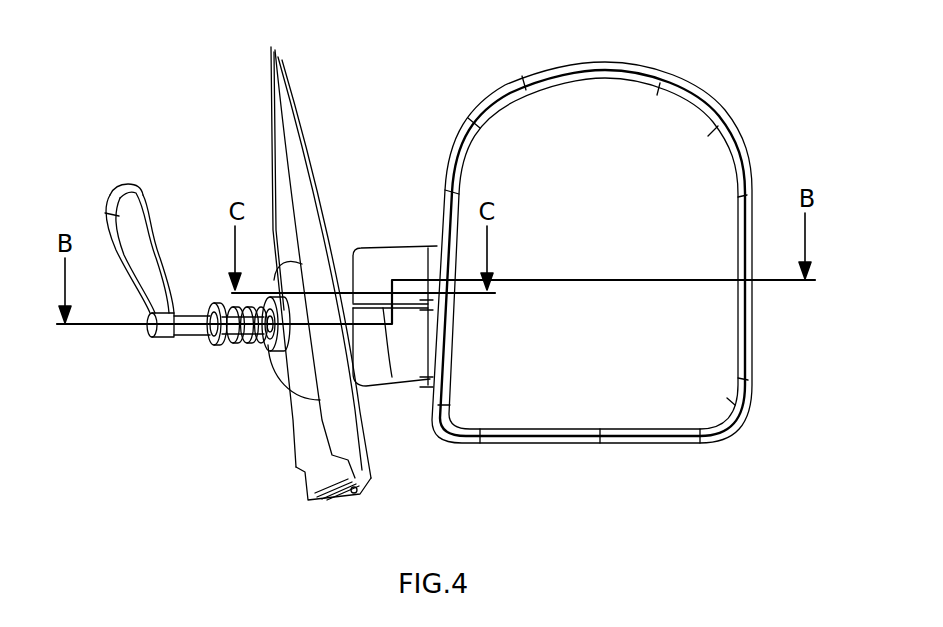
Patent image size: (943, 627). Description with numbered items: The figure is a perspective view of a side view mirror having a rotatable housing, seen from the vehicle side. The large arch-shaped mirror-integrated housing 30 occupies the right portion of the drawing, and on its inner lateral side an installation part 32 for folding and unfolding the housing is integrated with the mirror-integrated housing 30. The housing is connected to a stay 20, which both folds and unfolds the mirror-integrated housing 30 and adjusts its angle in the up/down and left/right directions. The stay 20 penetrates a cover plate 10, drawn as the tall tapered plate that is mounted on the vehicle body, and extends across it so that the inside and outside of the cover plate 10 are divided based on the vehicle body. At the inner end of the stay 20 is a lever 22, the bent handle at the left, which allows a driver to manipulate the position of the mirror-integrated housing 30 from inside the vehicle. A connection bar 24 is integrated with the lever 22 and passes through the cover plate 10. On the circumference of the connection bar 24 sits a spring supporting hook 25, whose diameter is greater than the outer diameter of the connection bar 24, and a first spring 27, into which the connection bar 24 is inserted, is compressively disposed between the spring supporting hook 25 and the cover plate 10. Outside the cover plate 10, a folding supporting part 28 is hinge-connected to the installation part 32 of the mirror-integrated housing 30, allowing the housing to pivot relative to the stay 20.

The cover plate 10 is at (293, 130).
The stay 20 is at (193, 308).
The lever 22 is at (127, 197).
The connection bar 24 is at (190, 333).
The spring supporting hook 25 is at (216, 345).
The first spring 27 is at (251, 335).
The folding supporting part 28 is at (375, 368).
The mirror-integrated housing 30 is at (572, 458).
The installation part 32 is at (372, 268).